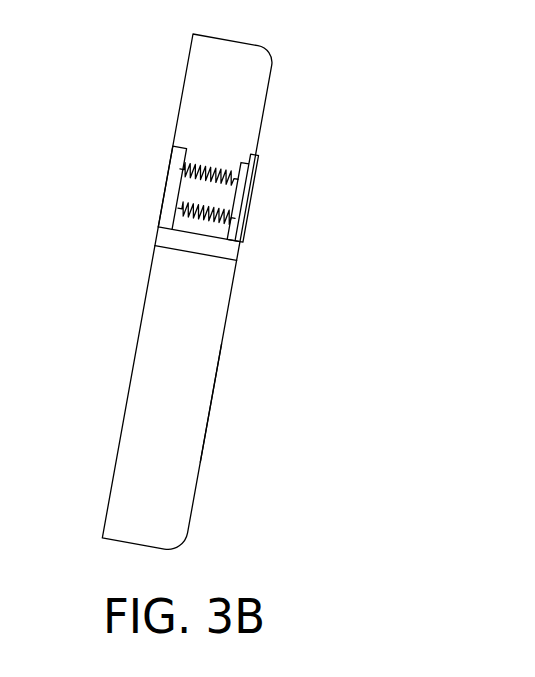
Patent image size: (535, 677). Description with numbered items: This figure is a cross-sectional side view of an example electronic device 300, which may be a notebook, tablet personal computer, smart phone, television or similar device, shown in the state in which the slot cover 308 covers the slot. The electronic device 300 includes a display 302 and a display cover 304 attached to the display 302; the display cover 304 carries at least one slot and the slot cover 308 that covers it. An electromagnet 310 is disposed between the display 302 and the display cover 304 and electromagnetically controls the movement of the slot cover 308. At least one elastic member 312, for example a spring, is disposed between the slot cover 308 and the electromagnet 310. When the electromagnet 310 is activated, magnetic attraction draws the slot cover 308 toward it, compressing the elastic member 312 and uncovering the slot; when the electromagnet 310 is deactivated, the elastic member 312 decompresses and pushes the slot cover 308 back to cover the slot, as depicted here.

The electronic device 300 is at (318, 506).
The display 302 is at (140, 334).
The display cover 304 is at (220, 348).
The slot cover 308 is at (248, 233).
The electromagnet 310 is at (169, 153).
The elastic member 312 is at (218, 168).